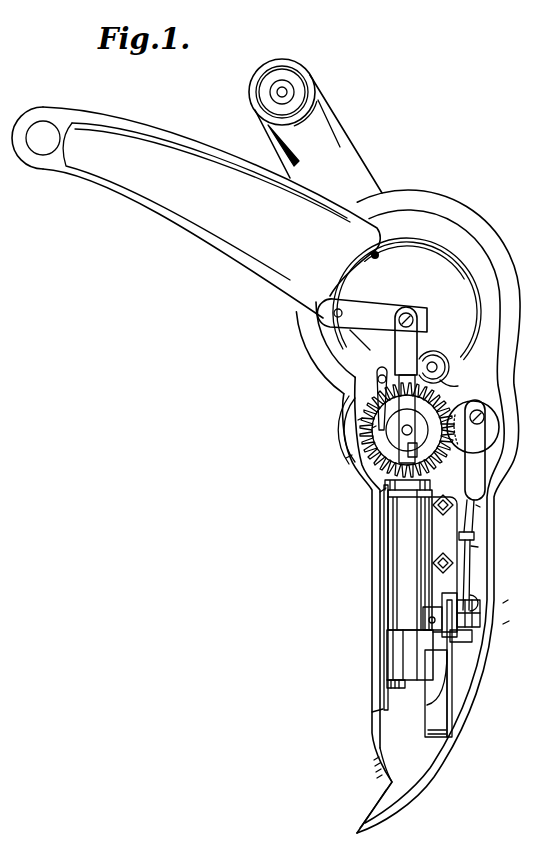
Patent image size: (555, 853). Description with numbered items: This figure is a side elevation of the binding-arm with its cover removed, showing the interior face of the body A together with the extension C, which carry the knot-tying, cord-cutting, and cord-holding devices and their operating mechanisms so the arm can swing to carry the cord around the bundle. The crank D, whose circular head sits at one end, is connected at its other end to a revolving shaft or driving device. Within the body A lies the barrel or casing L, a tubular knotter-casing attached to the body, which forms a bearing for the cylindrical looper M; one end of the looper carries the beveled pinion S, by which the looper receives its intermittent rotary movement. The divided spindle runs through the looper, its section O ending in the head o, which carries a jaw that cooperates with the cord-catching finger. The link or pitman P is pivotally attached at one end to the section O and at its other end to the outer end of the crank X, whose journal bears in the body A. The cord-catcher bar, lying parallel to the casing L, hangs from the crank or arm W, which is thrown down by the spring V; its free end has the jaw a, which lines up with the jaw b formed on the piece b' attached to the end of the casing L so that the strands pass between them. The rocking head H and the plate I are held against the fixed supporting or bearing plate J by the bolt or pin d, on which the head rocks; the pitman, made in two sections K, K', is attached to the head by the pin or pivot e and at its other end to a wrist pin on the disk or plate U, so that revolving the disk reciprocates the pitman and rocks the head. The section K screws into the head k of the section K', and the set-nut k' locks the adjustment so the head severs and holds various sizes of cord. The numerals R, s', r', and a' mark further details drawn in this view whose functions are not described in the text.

The body A is at (499, 577).
The extension C is at (196, 212).
The crank D is at (315, 126).
The crank X is at (372, 315).
The link or pitman P is at (397, 385).
The spring V is at (441, 356).
The crank or arm W is at (457, 384).
The gear wheel R is at (445, 459).
The beveled pinion S is at (432, 479).
The casing rim s' is at (355, 417).
The gear rim r' is at (369, 430).
The disk or plate U is at (481, 427).
The pitman section K' is at (475, 450).
The pitman section K is at (474, 555).
The set-nut k' is at (485, 508).
The head of section K' k is at (479, 547).
The head H is at (468, 593).
The barrel or casing L is at (422, 585).
The jaw or shoulder b is at (368, 597).
The piece b' is at (396, 692).
The jaw or shoulder a is at (370, 715).
The plate guide a' is at (417, 693).
The plate I is at (455, 640).
The head of section O o is at (432, 620).
The supporting or bearing plate J is at (452, 660).
The spindle section O is at (346, 458).
The looper M is at (380, 492).
The pin or pivot e is at (495, 602).
The bolt or pin d is at (492, 624).